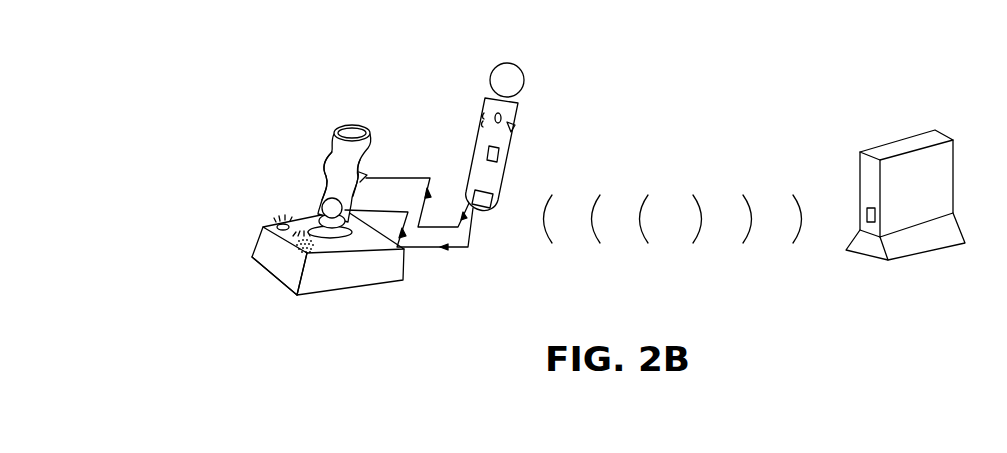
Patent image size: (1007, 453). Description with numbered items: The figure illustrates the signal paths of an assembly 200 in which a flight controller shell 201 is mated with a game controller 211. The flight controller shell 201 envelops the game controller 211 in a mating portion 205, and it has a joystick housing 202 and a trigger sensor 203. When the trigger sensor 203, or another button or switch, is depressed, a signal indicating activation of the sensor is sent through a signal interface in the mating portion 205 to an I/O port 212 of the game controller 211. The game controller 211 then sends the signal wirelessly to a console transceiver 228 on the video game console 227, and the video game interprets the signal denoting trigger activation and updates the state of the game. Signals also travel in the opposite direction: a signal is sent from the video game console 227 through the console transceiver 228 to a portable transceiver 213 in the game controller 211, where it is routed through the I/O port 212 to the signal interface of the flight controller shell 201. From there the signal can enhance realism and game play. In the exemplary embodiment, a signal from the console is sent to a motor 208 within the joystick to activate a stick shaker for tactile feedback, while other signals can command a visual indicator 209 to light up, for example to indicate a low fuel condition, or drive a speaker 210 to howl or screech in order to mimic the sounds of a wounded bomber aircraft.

The assembly 200 is at (285, 62).
The flight controller shell 201 is at (329, 160).
The joystick housing 202 is at (324, 177).
The trigger sensor 203 is at (364, 171).
The mating portion 205 is at (355, 130).
The motor 208 is at (321, 208).
The visual indicator 209 is at (253, 257).
The speaker 210 is at (288, 252).
The game controller 211 is at (521, 67).
The I/O port 212 is at (492, 198).
The portable transceiver 213 is at (501, 157).
The video game console 227 is at (888, 150).
The console transceiver 228 is at (880, 217).